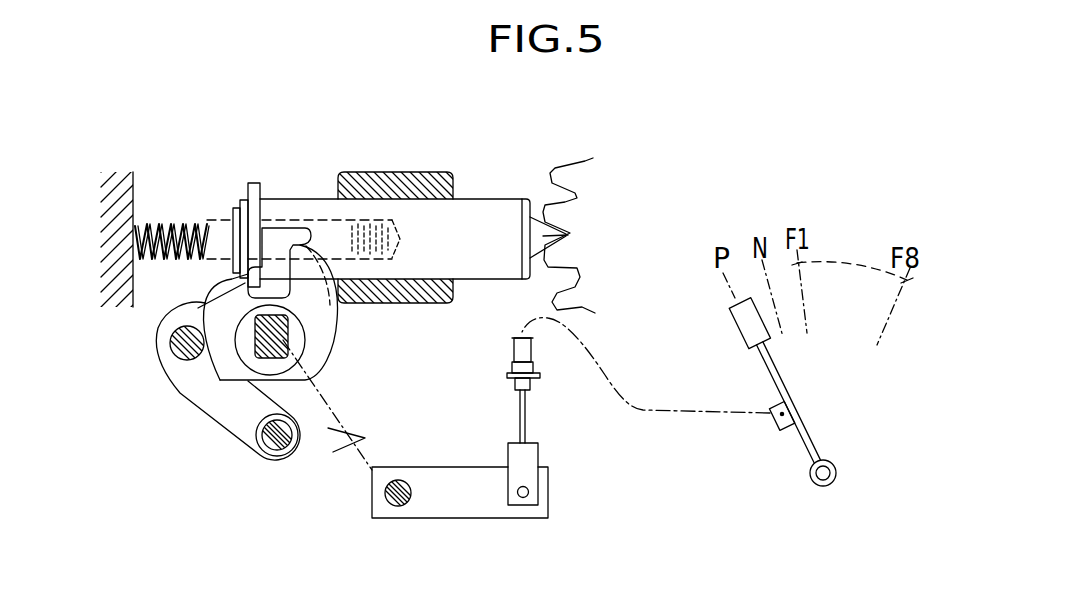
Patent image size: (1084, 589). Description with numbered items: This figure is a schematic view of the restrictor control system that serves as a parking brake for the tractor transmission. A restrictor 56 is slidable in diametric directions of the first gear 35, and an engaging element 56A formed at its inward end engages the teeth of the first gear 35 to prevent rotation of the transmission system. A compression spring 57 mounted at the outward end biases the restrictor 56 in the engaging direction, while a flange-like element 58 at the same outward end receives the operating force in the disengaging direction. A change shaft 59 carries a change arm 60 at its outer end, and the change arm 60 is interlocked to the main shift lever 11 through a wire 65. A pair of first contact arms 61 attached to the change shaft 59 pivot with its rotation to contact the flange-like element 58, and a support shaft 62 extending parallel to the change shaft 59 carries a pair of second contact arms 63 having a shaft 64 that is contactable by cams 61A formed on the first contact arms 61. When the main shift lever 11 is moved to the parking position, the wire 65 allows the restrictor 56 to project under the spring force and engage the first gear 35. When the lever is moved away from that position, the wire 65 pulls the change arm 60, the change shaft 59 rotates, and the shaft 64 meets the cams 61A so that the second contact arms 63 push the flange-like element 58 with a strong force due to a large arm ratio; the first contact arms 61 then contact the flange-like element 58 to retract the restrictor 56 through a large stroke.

The main shift lever 11 is at (768, 370).
The first gear 35 is at (552, 202).
The restrictor 56 is at (478, 199).
The engaging element 56A is at (568, 235).
The compression spring 57 is at (161, 223).
The flange-like element 58 is at (253, 183).
The change shaft 59 is at (288, 341).
The change arm 60 is at (470, 475).
The first contact arms 61 is at (278, 329).
The cams 61A is at (205, 372).
The support shaft 62 is at (283, 462).
The second contact arms 63 is at (277, 233).
The shaft 64 is at (182, 360).
The wire 65 is at (663, 412).